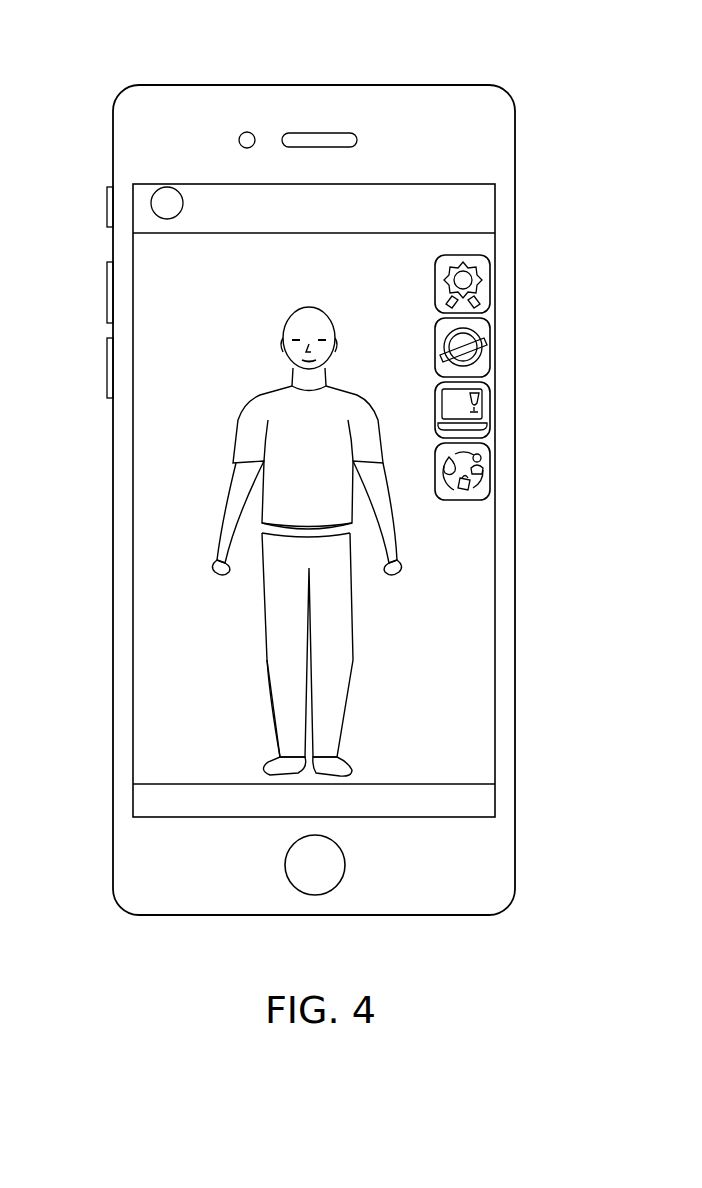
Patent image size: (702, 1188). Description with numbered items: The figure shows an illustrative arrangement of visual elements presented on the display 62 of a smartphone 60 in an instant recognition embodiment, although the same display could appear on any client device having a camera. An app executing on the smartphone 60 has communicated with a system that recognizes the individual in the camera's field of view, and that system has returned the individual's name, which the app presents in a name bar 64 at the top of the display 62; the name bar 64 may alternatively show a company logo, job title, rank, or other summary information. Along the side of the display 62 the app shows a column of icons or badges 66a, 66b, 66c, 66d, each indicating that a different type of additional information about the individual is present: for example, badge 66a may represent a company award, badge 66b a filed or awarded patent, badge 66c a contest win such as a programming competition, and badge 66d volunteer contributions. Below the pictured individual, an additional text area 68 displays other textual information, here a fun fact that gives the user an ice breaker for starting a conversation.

The smartphone 60 is at (118, 42).
The display 62 is at (158, 458).
The name bar 64 is at (150, 206).
The badge 66a is at (490, 262).
The badge 66b is at (490, 327).
The badge 66c is at (490, 388).
The badge 66d is at (490, 448).
The text area 68 is at (487, 793).